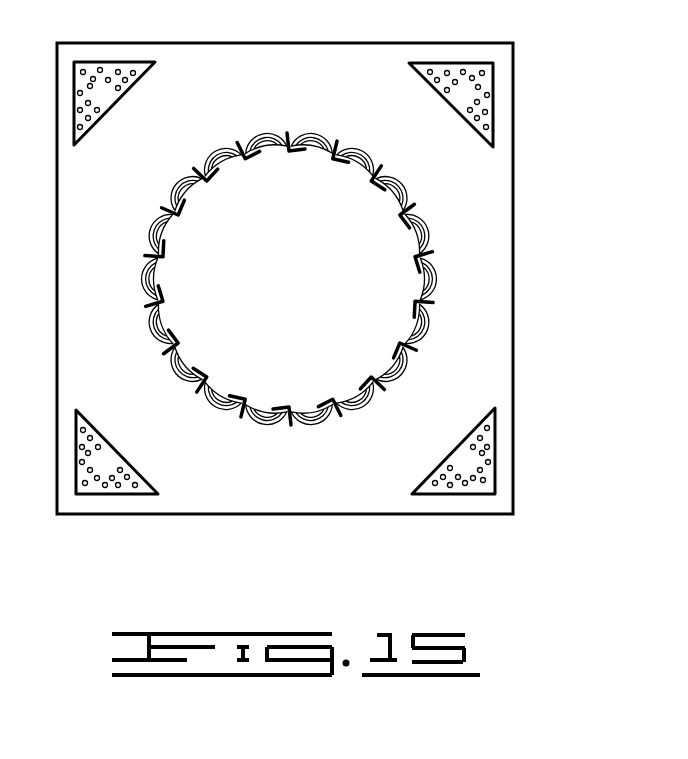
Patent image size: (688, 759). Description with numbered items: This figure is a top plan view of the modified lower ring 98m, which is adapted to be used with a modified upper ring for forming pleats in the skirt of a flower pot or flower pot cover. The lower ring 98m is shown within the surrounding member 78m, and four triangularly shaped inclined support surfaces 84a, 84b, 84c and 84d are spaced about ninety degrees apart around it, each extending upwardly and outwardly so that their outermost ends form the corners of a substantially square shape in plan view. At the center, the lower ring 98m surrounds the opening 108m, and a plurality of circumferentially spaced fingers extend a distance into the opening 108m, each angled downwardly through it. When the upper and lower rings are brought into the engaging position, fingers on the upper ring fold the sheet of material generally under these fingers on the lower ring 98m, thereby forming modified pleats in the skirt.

The square plate 78m is at (492, 302).
The inclined support surface 84a is at (102, 93).
The inclined support surface 84b is at (477, 88).
The inclined support surface 84c is at (472, 465).
The inclined support surface 84d is at (103, 470).
The modified lower ring 98m is at (440, 216).
The opening in the lower ring 108m is at (199, 346).